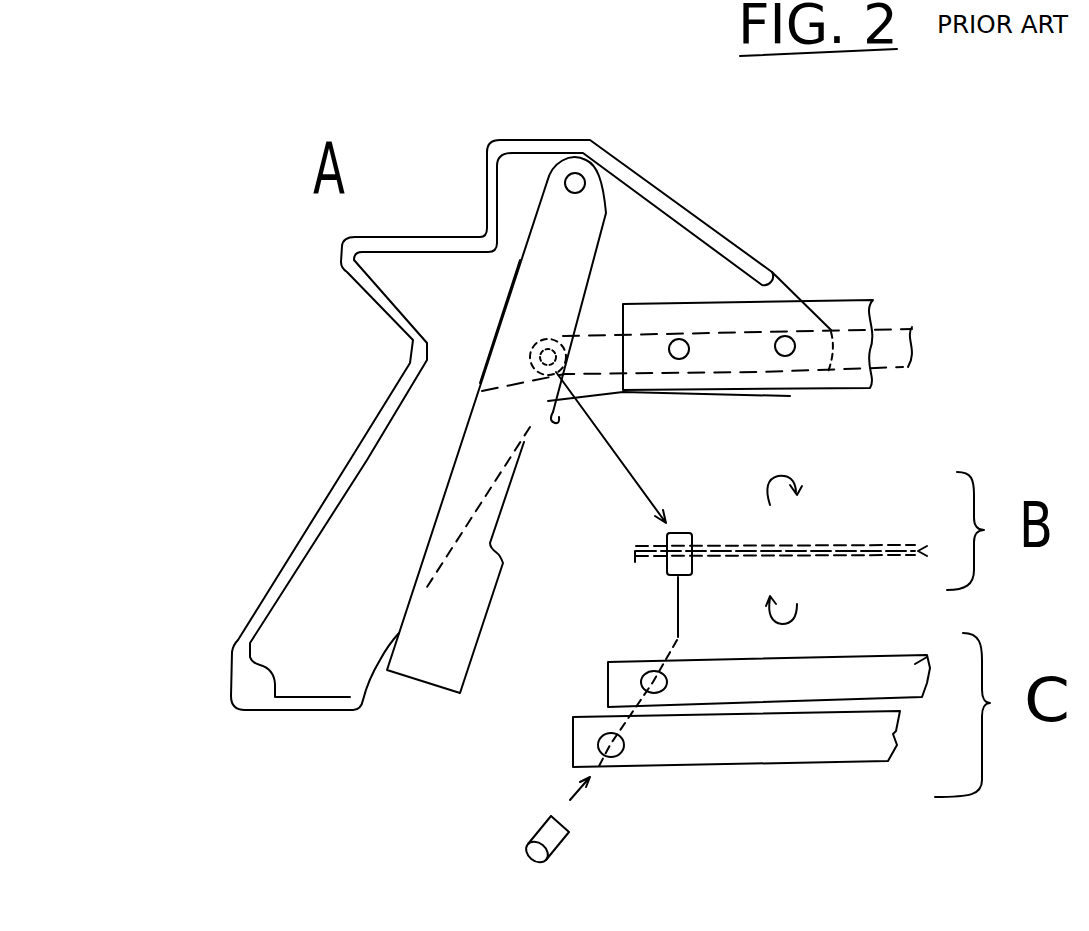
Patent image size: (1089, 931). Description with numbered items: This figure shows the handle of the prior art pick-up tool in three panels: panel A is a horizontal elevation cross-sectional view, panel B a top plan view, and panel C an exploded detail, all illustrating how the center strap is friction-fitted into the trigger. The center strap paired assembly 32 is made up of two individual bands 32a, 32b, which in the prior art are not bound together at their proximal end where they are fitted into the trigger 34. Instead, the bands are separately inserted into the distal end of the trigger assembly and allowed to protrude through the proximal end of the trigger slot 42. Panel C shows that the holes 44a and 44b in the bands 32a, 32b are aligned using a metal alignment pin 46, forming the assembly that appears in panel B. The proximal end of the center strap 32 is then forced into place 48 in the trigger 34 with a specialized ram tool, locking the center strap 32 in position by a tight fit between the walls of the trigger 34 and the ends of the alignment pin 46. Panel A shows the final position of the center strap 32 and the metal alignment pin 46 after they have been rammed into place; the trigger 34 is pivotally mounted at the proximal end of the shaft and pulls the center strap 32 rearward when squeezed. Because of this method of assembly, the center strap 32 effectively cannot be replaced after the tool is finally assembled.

The center strap paired assembly 32 is at (903, 322).
The band of center strap 32a is at (817, 762).
The band of center strap 32b is at (850, 653).
The trigger 34 is at (503, 500).
The trigger slot 42 is at (497, 337).
The hole 44a is at (611, 757).
The hole 44b is at (643, 660).
The metal alignment pin 46 is at (693, 533).
The place in the trigger 48 is at (541, 338).